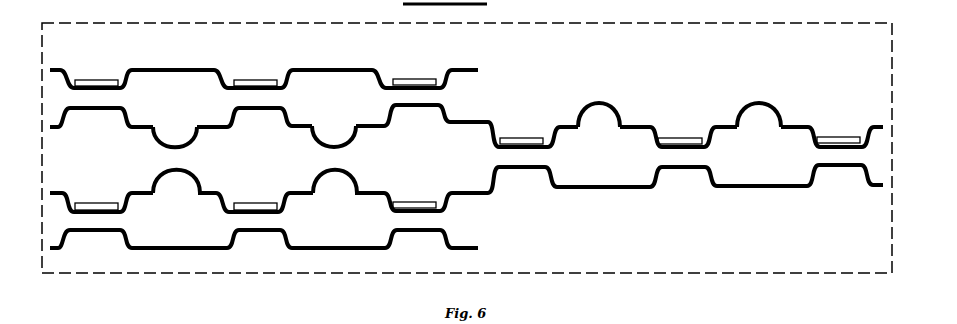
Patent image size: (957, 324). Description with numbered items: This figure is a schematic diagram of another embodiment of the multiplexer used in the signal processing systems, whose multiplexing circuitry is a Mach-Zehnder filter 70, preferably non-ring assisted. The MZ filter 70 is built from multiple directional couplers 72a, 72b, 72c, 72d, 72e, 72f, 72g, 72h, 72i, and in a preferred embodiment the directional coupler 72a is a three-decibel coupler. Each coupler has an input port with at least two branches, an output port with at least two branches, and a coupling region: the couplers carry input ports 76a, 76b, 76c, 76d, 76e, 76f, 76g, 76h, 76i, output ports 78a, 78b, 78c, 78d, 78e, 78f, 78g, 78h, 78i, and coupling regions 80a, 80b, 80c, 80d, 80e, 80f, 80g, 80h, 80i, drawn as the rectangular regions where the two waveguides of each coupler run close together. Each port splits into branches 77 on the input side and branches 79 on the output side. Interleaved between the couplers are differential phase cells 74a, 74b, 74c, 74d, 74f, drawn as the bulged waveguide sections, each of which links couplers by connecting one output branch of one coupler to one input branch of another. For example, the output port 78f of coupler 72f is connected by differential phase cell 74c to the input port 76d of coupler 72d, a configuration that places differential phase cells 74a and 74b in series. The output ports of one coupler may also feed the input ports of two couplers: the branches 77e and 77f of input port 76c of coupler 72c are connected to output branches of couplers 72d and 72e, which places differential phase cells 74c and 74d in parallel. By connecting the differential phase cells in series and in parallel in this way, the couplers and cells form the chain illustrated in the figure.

The MZ filter 70 is at (122, 23).
The directional coupler 72a is at (837, 192).
The directional coupler 72b is at (683, 193).
The directional coupler 72c is at (519, 192).
The directional coupler 72d is at (421, 132).
The directional coupler 72e is at (420, 252).
The directional coupler 72f is at (261, 133).
The directional coupler 72g is at (259, 251).
The directional coupler 72h is at (98, 130).
The directional coupler 72i is at (106, 251).
The differential phase cell 74a is at (200, 138).
The differential phase cell 74b is at (580, 125).
The differential phase cell 74c is at (356, 135).
The differential phase cell 74d is at (363, 251).
The differential phase cell 74f is at (204, 252).
The input port 76a is at (816, 128).
The input port 76b is at (658, 130).
The input port 76c is at (503, 130).
The input port 76d is at (395, 73).
The input port 76e is at (394, 193).
The input port 76f is at (239, 73).
The input port 76g is at (232, 193).
The input port 76h is at (78, 74).
The input port 76i is at (75, 195).
The branch 77 is at (231, 74).
The branch 77e is at (490, 136).
The branch 77f is at (494, 188).
The output port 78a is at (866, 125).
The output port 78b is at (705, 126).
The output port 78c is at (548, 126).
The output port 78d is at (443, 68).
The output port 78e is at (441, 193).
The output port 78f is at (284, 69).
The output port 78g is at (280, 193).
The output port 78h is at (122, 69).
The output port 78i is at (121, 194).
The branch 79 is at (124, 86).
The coupling region 80a is at (838, 136).
The coupling region 80b is at (679, 137).
The coupling region 80c is at (521, 137).
The coupling region 80d is at (413, 78).
The coupling region 80e is at (412, 201).
The coupling region 80f is at (256, 79).
The coupling region 80g is at (257, 203).
The coupling region 80h is at (95, 79).
The coupling region 80i is at (97, 203).